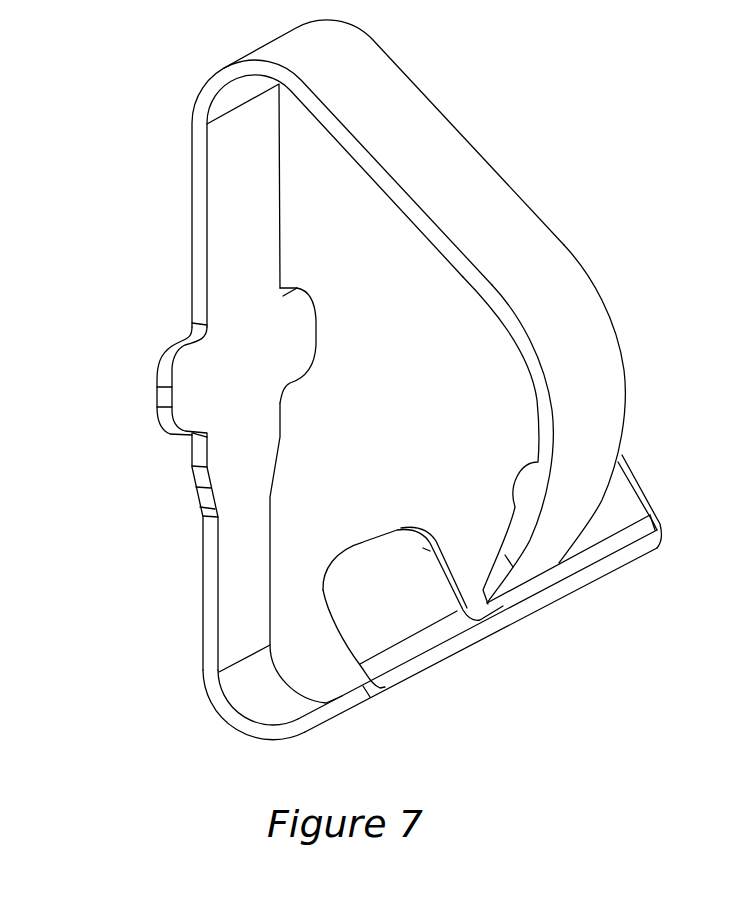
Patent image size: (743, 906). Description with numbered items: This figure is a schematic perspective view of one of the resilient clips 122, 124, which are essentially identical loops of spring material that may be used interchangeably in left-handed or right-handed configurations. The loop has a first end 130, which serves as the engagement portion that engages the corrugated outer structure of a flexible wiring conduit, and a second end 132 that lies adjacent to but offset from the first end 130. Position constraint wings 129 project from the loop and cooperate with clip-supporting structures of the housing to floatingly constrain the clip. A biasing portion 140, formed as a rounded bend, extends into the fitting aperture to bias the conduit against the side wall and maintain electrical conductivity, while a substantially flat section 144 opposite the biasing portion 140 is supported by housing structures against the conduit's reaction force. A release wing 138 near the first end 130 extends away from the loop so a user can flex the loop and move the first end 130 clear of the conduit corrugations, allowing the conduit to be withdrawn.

The resilient clip 122 is at (560, 153).
The resilient clip 124 is at (393, 380).
The substantially flat section 144 is at (192, 220).
The position constraint wing 129 is at (190, 375).
The biasing portion 140 is at (607, 388).
The release wing 138 is at (385, 563).
The first end 130 is at (613, 558).
The second end 132 is at (507, 593).